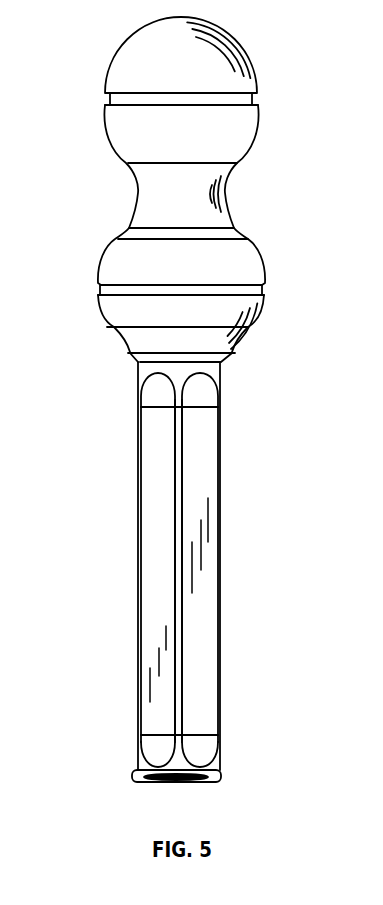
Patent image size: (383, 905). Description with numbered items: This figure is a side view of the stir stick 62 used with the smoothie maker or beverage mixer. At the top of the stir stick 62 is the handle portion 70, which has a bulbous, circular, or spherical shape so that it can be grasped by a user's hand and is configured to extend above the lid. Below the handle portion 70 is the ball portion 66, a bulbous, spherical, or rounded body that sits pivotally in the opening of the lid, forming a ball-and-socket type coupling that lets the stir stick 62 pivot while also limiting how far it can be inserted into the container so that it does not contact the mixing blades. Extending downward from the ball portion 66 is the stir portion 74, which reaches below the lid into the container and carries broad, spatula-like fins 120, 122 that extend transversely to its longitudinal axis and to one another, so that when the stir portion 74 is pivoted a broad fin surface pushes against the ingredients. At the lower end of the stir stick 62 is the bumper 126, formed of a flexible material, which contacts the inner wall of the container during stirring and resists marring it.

The handle portion 70 is at (260, 77).
The ball portion 66 is at (260, 320).
The stir stick 62 is at (232, 585).
The stir portion 74 is at (205, 473).
The fin 120 is at (148, 655).
The fin 122 is at (173, 578).
The bumper 126 is at (221, 771).